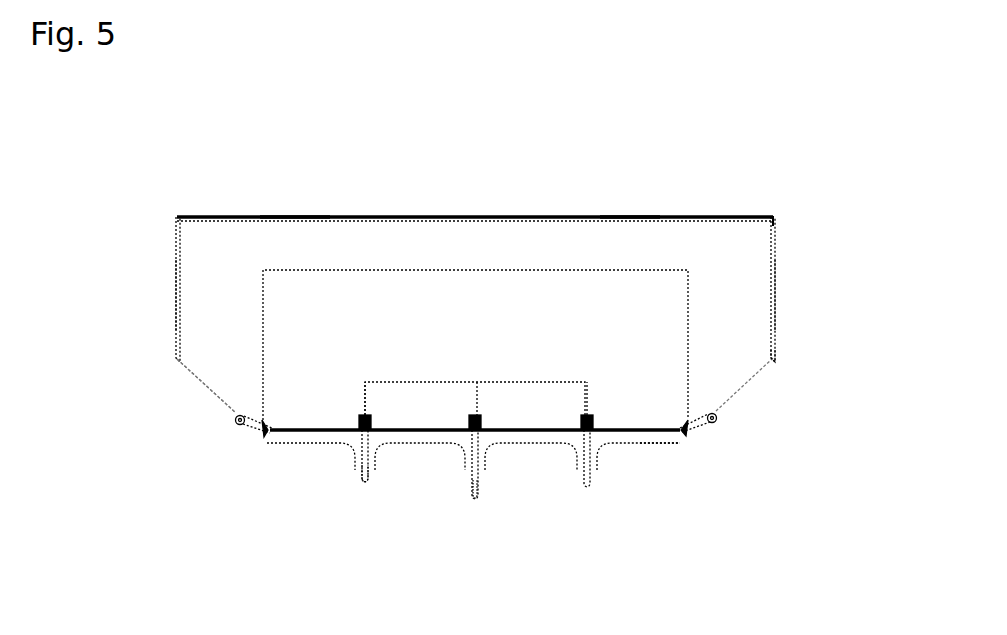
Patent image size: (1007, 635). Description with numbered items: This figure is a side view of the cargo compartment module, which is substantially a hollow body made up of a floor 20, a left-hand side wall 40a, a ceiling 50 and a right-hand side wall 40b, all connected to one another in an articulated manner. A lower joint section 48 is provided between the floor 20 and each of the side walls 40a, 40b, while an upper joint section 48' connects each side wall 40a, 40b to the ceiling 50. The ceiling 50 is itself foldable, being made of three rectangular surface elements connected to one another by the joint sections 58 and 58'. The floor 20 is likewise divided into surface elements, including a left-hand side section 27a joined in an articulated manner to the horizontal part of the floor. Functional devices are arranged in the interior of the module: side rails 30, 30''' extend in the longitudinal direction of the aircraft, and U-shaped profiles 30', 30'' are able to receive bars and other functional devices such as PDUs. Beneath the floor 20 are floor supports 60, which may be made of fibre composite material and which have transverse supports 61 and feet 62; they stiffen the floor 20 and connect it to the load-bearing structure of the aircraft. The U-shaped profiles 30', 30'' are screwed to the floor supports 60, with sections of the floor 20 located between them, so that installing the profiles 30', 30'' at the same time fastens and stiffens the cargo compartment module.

The floor 20 is at (392, 410).
The left-hand side section 27a is at (207, 381).
The side rail 30 is at (386, 509).
The U-shaped profile 30' is at (267, 477).
The U-shaped profile 30'' is at (551, 491).
The side rail 30''' is at (756, 484).
The left-hand side wall 40a is at (177, 293).
The right-hand side wall 40b is at (777, 298).
The lower joint section 48 is at (833, 355).
The upper joint section 48' is at (838, 168).
The ceiling 50 is at (475, 213).
The joint section 58 is at (269, 153).
The joint section 58' is at (677, 159).
The floor support 60 is at (693, 427).
The transverse support 61 is at (482, 478).
The foot 62 is at (364, 452).